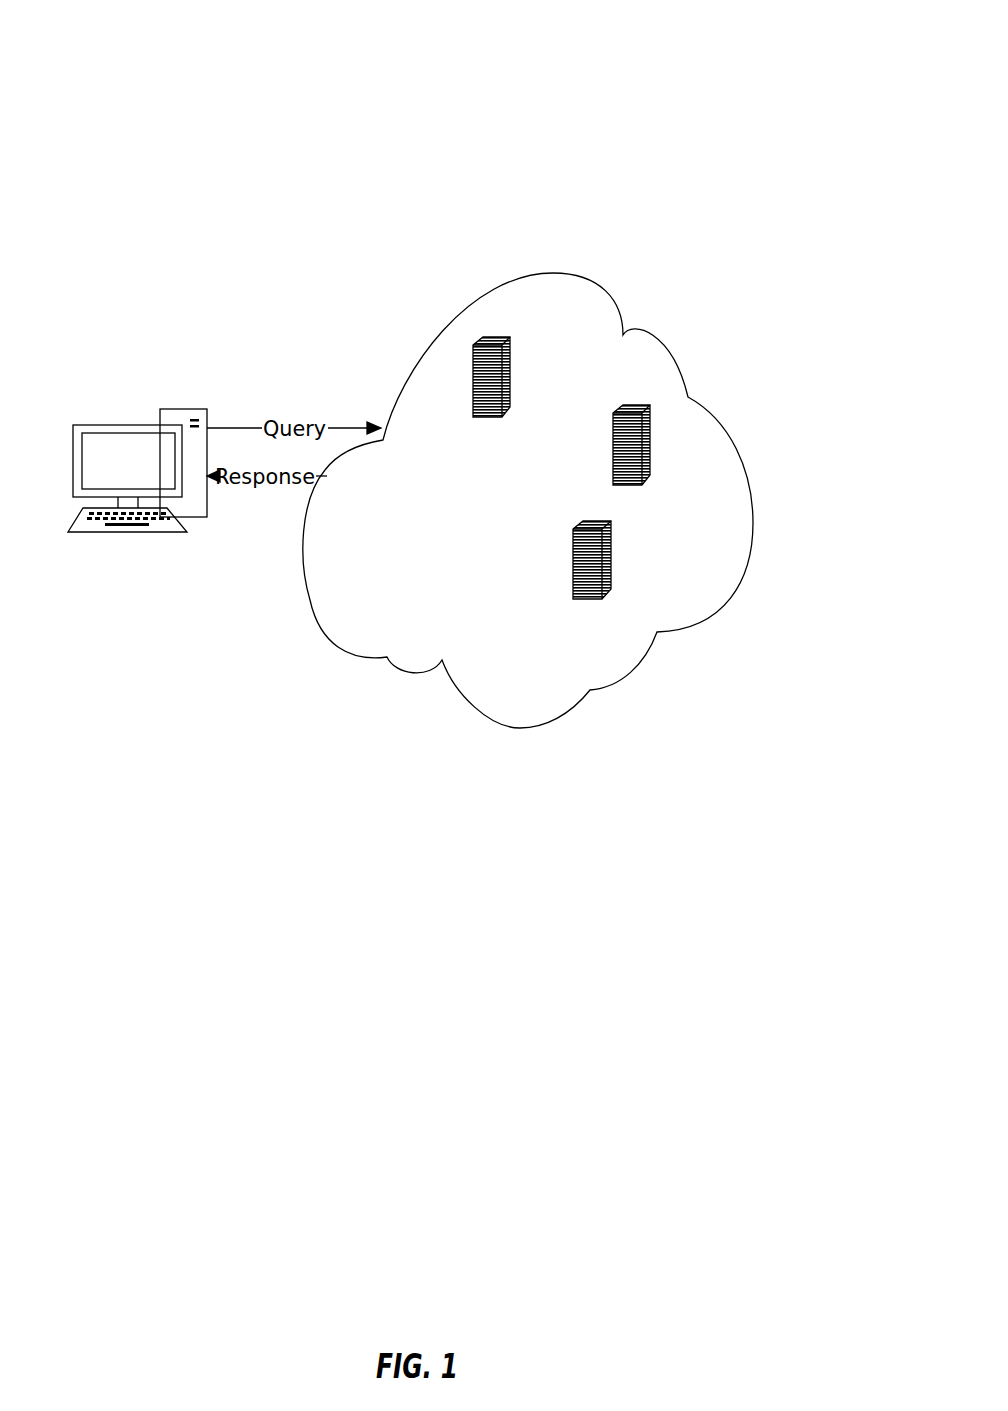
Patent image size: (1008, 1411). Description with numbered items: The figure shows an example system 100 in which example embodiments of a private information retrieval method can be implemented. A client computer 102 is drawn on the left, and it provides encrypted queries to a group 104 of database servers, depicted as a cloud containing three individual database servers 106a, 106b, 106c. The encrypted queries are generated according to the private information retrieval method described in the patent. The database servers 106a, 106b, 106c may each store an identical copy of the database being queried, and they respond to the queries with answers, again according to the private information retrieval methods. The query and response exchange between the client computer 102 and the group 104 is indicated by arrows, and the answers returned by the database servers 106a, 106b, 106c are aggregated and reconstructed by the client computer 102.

The system 100 is at (786, 31).
The client computer 102 is at (186, 409).
The group of database servers 104 is at (610, 301).
The database server 106a is at (510, 374).
The database server 106b is at (650, 442).
The database server 106c is at (612, 558).